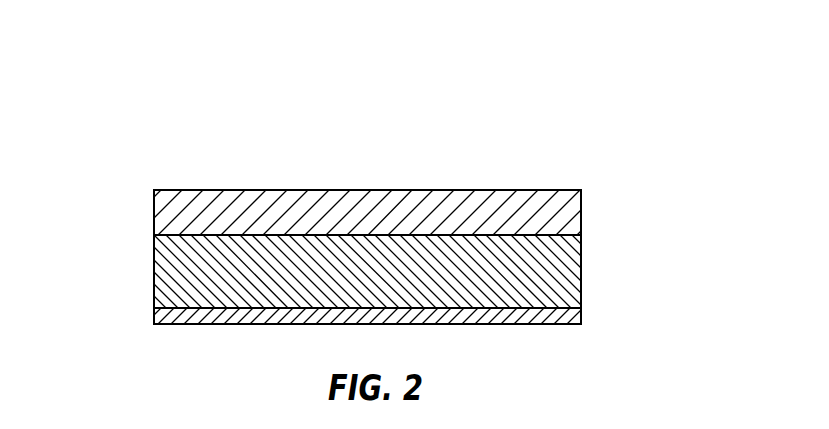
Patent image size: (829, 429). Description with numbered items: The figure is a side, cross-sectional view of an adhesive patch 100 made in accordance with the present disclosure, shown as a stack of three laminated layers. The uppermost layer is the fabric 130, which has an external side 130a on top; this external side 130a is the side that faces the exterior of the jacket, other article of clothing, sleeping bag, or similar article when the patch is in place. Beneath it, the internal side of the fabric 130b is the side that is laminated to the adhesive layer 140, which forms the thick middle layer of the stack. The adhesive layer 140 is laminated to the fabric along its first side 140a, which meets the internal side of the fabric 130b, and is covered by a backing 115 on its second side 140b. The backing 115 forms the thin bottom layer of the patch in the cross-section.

The adhesive patch 100 is at (207, 112).
The fabric 130 is at (582, 208).
The external side 130a is at (340, 189).
The internal side of the fabric 130b is at (185, 238).
The adhesive layer 140 is at (582, 276).
The first side 140a is at (553, 239).
The second side 140b is at (185, 303).
The backing 115 is at (582, 313).